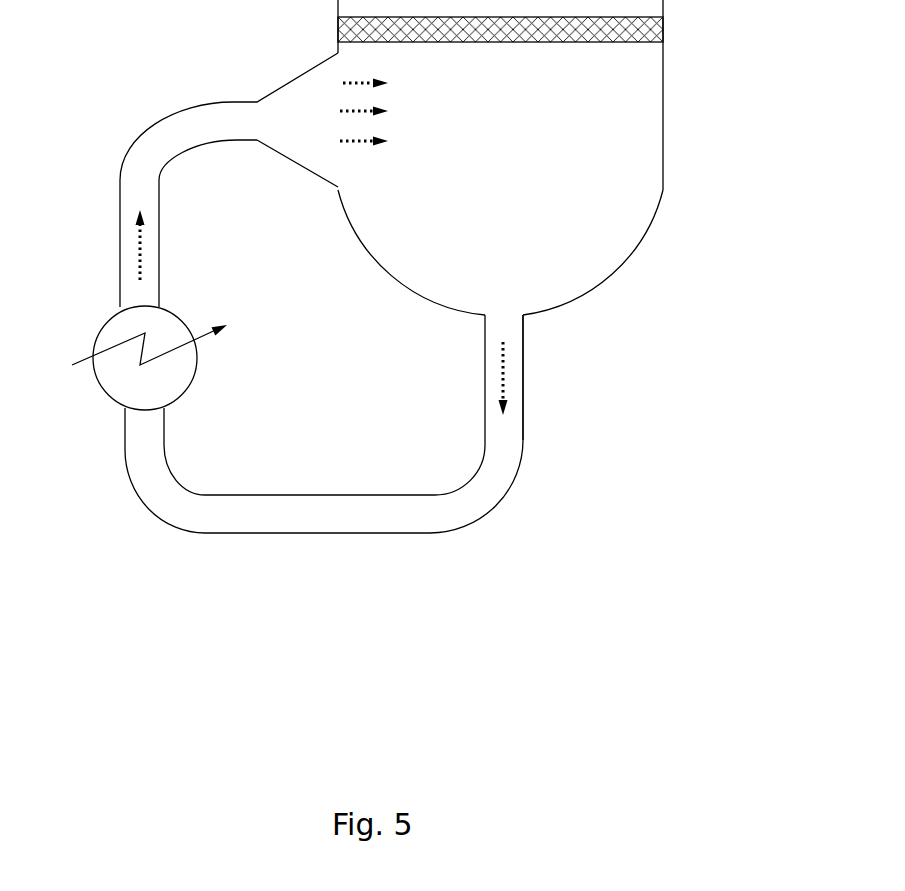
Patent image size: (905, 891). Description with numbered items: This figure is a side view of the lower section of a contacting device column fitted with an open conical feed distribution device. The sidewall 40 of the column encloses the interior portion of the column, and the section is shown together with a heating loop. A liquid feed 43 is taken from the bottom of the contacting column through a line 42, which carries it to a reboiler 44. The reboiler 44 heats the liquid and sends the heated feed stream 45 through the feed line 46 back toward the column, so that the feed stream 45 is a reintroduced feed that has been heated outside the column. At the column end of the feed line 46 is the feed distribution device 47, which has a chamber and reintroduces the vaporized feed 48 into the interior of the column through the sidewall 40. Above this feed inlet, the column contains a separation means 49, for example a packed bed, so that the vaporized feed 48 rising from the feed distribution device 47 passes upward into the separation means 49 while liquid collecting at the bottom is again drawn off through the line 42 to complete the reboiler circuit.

The sidewall 40 is at (398, 287).
The line 42 is at (523, 438).
The liquid feed 43 is at (503, 390).
The reboiler 44 is at (159, 397).
The feed stream 45 is at (140, 250).
The feed line 46 is at (160, 120).
The feed distribution device 47 is at (277, 153).
The vaporized feed 48 is at (343, 88).
The separation means 49 is at (663, 25).